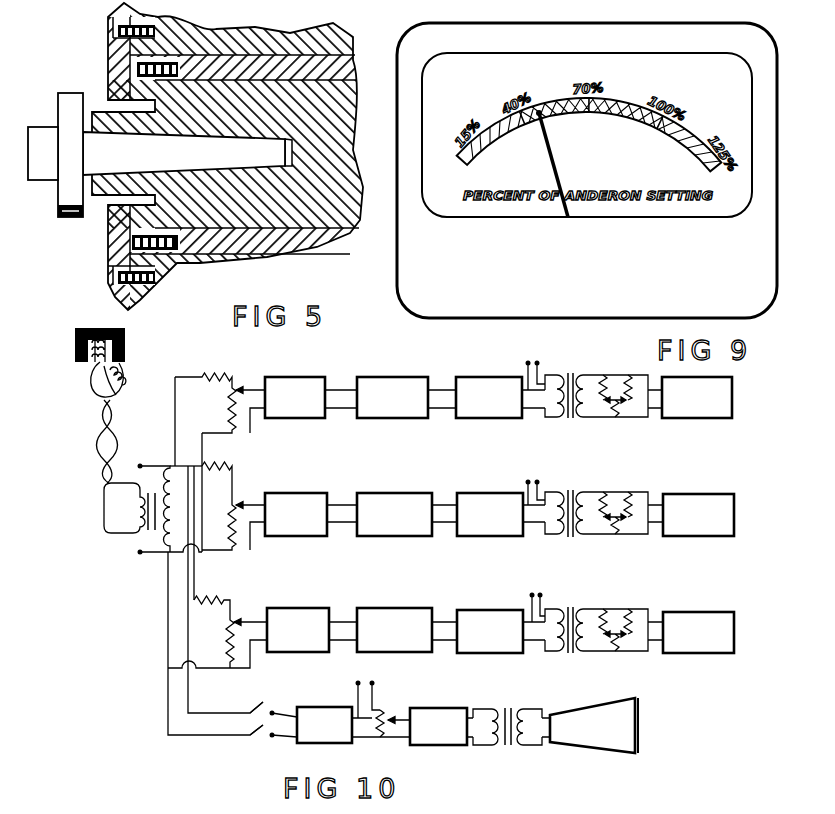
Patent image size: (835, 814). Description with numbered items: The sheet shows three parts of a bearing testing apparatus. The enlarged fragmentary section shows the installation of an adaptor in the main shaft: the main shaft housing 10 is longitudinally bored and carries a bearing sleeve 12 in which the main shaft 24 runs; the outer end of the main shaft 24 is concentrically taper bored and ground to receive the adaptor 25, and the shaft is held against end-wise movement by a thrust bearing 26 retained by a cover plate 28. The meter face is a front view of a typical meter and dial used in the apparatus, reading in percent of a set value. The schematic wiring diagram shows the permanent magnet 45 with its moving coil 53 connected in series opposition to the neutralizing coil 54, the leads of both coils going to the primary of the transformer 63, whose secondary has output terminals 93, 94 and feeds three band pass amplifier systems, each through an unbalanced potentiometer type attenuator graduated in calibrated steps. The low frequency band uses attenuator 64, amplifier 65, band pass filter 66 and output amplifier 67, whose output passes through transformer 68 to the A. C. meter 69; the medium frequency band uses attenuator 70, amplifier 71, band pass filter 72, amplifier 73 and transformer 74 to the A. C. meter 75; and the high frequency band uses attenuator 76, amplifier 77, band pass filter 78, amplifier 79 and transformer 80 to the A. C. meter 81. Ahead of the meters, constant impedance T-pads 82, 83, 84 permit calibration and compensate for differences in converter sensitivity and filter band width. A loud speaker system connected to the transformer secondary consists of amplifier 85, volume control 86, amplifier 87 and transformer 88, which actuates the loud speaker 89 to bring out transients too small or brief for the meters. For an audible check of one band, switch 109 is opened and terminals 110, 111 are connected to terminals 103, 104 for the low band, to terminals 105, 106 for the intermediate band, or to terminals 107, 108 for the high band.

In FIG. 5, the main shaft housing 10 is at (307, 43).
In FIG. 5, the bearing sleeve 12 is at (333, 62).
In FIG. 5, the main shaft 24 is at (320, 120).
In FIG. 5, the adaptor 25 is at (65, 214).
In FIG. 5, the thrust bearing 26 is at (110, 245).
In FIG. 5, the cover plate 28 is at (110, 70).
In FIG. 10, the permanent magnet 45 is at (123, 347).
In FIG. 10, the moving coil 53 is at (95, 358).
In FIG. 10, the neutralizing coil 54 is at (120, 390).
In FIG. 10, the transformer 63 is at (150, 537).
In FIG. 10, the low frequency band amplifier attenuator 64 is at (208, 395).
In FIG. 10, the amplifier 65 is at (303, 388).
In FIG. 10, the band pass filter 66 is at (413, 358).
In FIG. 10, the output amplifier 67 is at (472, 380).
In FIG. 10, the transformer 68 is at (573, 418).
In FIG. 10, the A. C. meter 69 is at (713, 381).
In FIG. 10, the attenuator 70 is at (218, 487).
In FIG. 10, the amplifier 71 is at (292, 502).
In FIG. 10, the band pass filter 72 is at (380, 503).
In FIG. 10, the amplifier 73 is at (493, 475).
In FIG. 10, the transformer 74 is at (573, 493).
In FIG. 10, the A. C. meter 75 is at (745, 470).
In FIG. 10, the attenuator 76 is at (212, 617).
In FIG. 10, the amplifier 77 is at (322, 588).
In FIG. 10, the band pass filter 78 is at (413, 587).
In FIG. 10, the amplifier 79 is at (490, 590).
In FIG. 10, the transformer 80 is at (568, 610).
In FIG. 10, the A. C. meter 81 is at (693, 617).
In FIG. 10, the T-pad 82 is at (616, 383).
In FIG. 10, the T-pad 83 is at (613, 505).
In FIG. 10, the T-pad 84 is at (613, 622).
In FIG. 10, the amplifier 85 is at (300, 707).
In FIG. 10, the volume control 86 is at (392, 718).
In FIG. 10, the amplifier 87 is at (443, 712).
In FIG. 10, the transformer 88 is at (510, 710).
In FIG. 10, the loud speaker 89 is at (633, 712).
In FIG. 10, the output terminal 93 is at (153, 442).
In FIG. 10, the output terminal 94 is at (140, 552).
In FIG. 10, the terminal 103 is at (528, 363).
In FIG. 10, the terminal 104 is at (592, 345).
In FIG. 10, the terminal 105 is at (528, 482).
In FIG. 10, the terminal 106 is at (590, 445).
In FIG. 10, the terminal 107 is at (532, 595).
In FIG. 10, the terminal 108 is at (580, 568).
In FIG. 10, the switch 109 is at (258, 735).
In FIG. 10, the terminal 110 is at (358, 683).
In FIG. 10, the terminal 111 is at (410, 667).